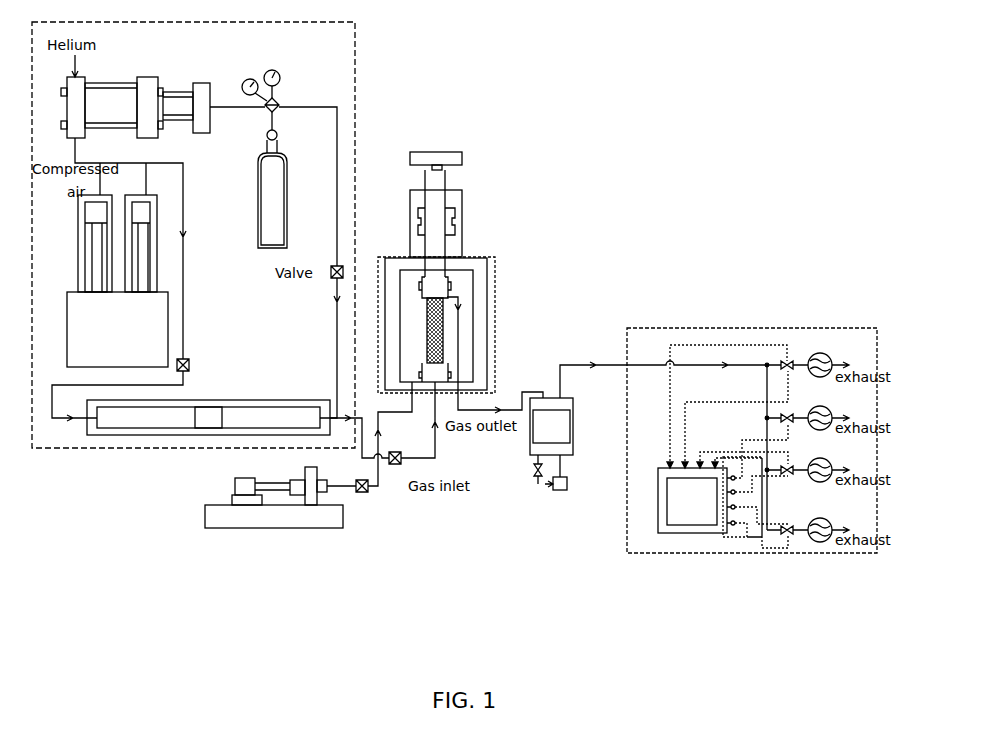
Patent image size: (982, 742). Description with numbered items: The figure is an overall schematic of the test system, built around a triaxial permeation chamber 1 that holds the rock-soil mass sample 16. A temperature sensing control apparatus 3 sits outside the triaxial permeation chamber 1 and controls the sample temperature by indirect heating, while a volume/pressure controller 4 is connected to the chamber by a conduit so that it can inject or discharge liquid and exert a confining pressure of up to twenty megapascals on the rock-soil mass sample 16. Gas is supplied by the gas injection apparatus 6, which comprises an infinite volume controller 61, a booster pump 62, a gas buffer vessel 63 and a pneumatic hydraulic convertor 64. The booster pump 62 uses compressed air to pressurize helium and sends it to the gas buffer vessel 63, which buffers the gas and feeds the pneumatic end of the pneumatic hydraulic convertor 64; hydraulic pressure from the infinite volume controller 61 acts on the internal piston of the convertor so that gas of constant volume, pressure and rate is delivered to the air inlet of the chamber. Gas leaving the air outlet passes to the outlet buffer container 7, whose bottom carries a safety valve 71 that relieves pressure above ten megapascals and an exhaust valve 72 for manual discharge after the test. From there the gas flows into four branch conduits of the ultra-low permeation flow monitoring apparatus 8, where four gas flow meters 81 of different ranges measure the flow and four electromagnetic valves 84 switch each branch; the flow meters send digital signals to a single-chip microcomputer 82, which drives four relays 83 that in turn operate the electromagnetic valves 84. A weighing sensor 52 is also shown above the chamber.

The triaxial permeation chamber 1 is at (470, 251).
The temperature sensing control apparatus 3 is at (543, 290).
The volume/pressure controller 4 is at (234, 537).
The gas injection apparatus 6 is at (169, 455).
The outlet buffer container 7 is at (531, 426).
The ultra-low permeation flow monitoring apparatus 8 is at (644, 562).
The rock-soil mass sample 16 is at (450, 346).
The weighing sensor 52 is at (468, 147).
The infinite volume controller 61 is at (172, 332).
The booster pump 62 is at (173, 103).
The gas buffer vessel 63 is at (287, 147).
The pneumatic hydraulic convertor 64 is at (232, 397).
The safety valve 71 is at (563, 500).
The exhaust valve 72 is at (537, 483).
The gas flow meters 81 is at (831, 352).
The single-chip microcomputer 82 is at (681, 541).
The relays 83 is at (741, 534).
The electromagnetic valves 84 is at (794, 357).